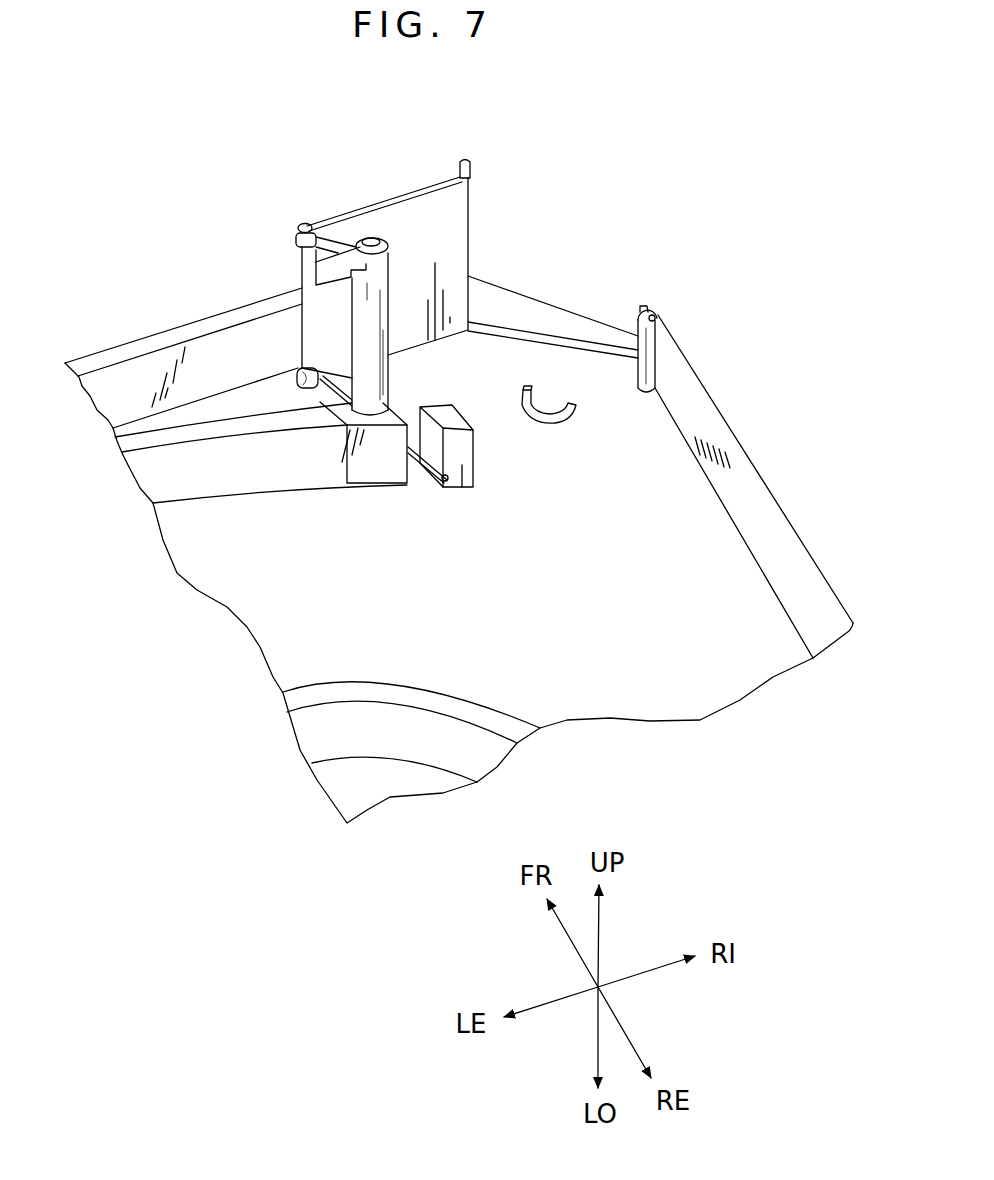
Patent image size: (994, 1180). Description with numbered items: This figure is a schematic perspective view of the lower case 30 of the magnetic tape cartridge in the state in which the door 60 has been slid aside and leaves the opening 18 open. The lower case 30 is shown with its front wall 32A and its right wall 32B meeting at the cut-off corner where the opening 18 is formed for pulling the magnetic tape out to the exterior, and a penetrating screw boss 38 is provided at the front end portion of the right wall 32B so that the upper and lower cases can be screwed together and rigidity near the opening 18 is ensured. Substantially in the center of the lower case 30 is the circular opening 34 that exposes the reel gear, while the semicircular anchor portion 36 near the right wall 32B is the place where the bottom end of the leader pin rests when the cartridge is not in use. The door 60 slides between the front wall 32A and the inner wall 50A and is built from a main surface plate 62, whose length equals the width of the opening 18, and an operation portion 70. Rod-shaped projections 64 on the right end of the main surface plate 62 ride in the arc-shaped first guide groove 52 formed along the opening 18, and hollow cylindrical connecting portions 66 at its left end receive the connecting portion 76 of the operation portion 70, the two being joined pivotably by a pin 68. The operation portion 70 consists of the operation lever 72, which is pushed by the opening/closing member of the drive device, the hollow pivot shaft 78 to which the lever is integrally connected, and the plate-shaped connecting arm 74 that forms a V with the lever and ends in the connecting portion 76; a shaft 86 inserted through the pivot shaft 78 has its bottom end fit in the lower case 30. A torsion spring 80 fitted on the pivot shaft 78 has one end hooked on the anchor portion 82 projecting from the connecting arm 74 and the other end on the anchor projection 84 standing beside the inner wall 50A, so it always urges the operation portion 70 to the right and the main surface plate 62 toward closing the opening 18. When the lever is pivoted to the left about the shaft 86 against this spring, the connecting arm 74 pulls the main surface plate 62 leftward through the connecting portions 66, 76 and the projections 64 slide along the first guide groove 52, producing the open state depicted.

The opening 18 is at (573, 310).
The lower case 30 is at (813, 547).
The front wall 32A is at (127, 343).
The right wall 32B is at (733, 437).
The circular opening 34 is at (420, 733).
The anchor portion 36 is at (563, 417).
The screw boss 38 is at (660, 311).
The inner wall 50A is at (215, 472).
The first guide groove 52 is at (603, 342).
The door 60 is at (478, 233).
The main surface plate 62 is at (410, 222).
The projection 64 is at (464, 160).
The connecting portion 66 is at (297, 236).
The pin 68 is at (306, 224).
The operation portion 70 is at (366, 350).
The operation lever 72 is at (336, 272).
The connecting arm 74 is at (321, 317).
The connecting portion 76 is at (298, 268).
The pivot shaft 78 is at (388, 380).
The torsion spring 80 is at (431, 478).
The anchor portion 82 is at (333, 381).
The anchor projection 84 is at (465, 487).
The shaft 86 is at (368, 238).